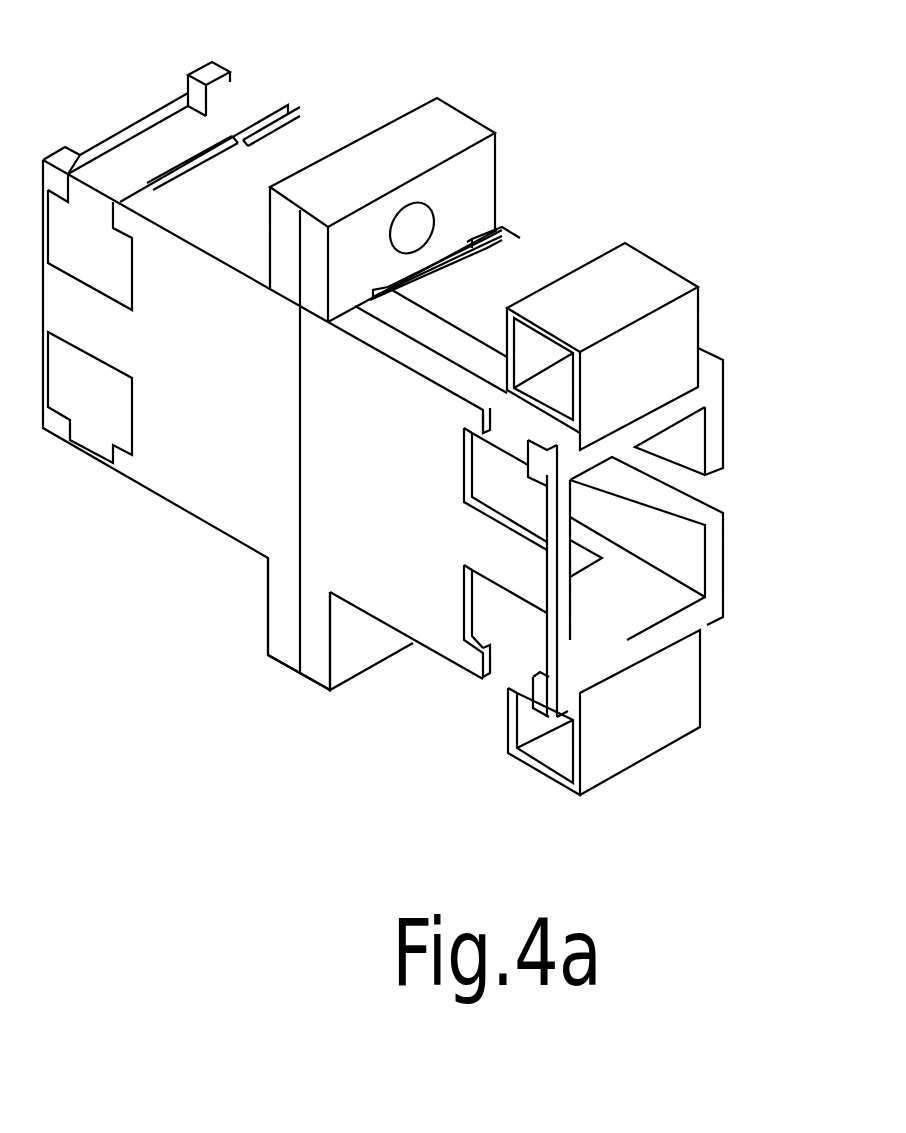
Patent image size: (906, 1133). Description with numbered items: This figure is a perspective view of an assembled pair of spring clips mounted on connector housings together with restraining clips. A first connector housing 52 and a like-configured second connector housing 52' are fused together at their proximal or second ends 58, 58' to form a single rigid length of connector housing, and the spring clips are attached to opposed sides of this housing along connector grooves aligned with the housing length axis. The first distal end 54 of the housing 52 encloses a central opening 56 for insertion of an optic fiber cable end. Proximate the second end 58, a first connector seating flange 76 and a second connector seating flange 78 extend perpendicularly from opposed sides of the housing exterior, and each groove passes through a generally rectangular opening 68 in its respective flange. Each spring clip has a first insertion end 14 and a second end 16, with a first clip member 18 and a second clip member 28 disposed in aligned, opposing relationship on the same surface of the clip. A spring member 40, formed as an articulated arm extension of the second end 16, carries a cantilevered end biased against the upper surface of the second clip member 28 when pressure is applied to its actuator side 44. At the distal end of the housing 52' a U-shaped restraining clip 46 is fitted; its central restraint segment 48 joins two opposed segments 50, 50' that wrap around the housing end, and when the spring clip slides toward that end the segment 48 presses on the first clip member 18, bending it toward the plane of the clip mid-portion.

The first insertion end 14 is at (183, 102).
The second end 16 is at (680, 386).
The first clip member 18 is at (270, 177).
The second clip member 28 is at (483, 295).
The spring member 40 is at (660, 260).
The actuator side 44 is at (605, 315).
The restraining clip 46 is at (163, 100).
The central restraint segment 48 is at (178, 160).
The opposed segment 50 is at (90, 242).
The opposed segment 50' is at (90, 397).
The first connector housing 52 is at (405, 500).
The second connector housing 52' is at (186, 425).
The first distal end 54 is at (722, 443).
The central opening 56 is at (688, 600).
The second end 58 is at (360, 675).
The second end 58' is at (239, 637).
The rectangular opening 68 is at (392, 300).
The first connector seating flange 76 is at (483, 170).
The second connector seating flange 78 is at (368, 642).